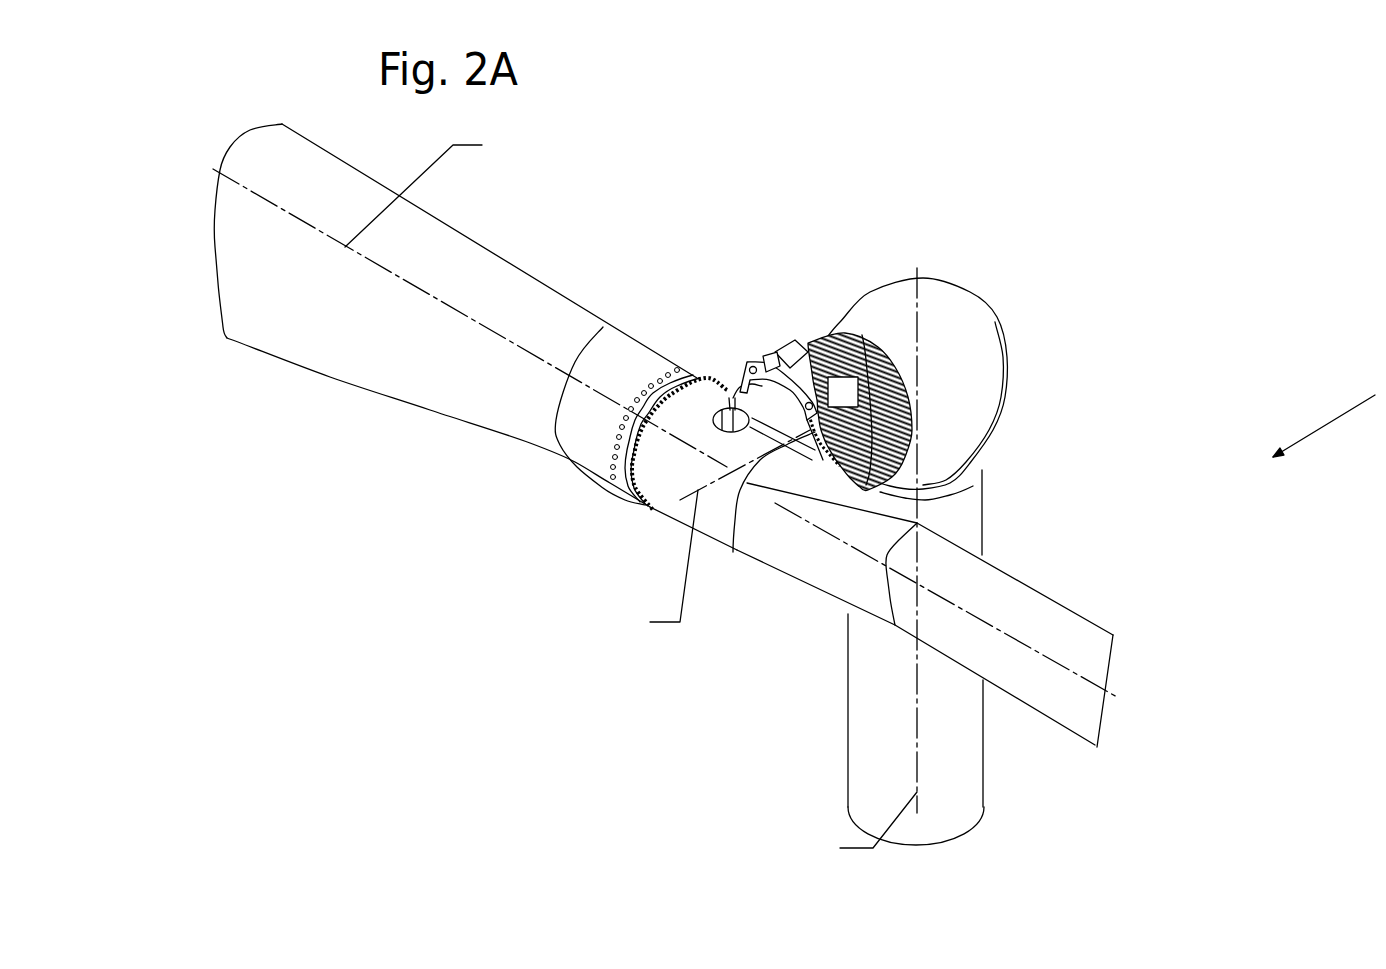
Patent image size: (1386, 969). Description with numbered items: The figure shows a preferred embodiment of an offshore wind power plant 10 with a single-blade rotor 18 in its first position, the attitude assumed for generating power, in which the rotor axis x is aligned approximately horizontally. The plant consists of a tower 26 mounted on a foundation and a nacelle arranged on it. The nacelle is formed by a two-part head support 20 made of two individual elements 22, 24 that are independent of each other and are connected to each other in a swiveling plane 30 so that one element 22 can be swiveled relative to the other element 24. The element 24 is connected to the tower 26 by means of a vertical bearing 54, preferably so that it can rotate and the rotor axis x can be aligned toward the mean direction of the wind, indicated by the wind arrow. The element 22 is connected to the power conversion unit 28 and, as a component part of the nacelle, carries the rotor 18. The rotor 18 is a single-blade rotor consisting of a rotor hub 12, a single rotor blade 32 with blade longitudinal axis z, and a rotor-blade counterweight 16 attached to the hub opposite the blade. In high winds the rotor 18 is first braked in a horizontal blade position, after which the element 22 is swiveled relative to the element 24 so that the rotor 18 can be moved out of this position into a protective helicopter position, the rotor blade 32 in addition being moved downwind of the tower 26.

The offshore wind power plant 10 is at (1057, 780).
The rotor hub 12 is at (718, 510).
The rotor-blade counterweight 16 is at (1025, 618).
The rotor 18 is at (672, 525).
The head support 20 is at (970, 260).
The element 22 is at (970, 348).
The element 24 is at (965, 463).
The tower 26 is at (960, 773).
The power conversion unit 28 is at (777, 328).
The swiveling plane 30 is at (912, 385).
The rotor blade 32 is at (513, 310).
The vertical bearing 54 is at (965, 482).